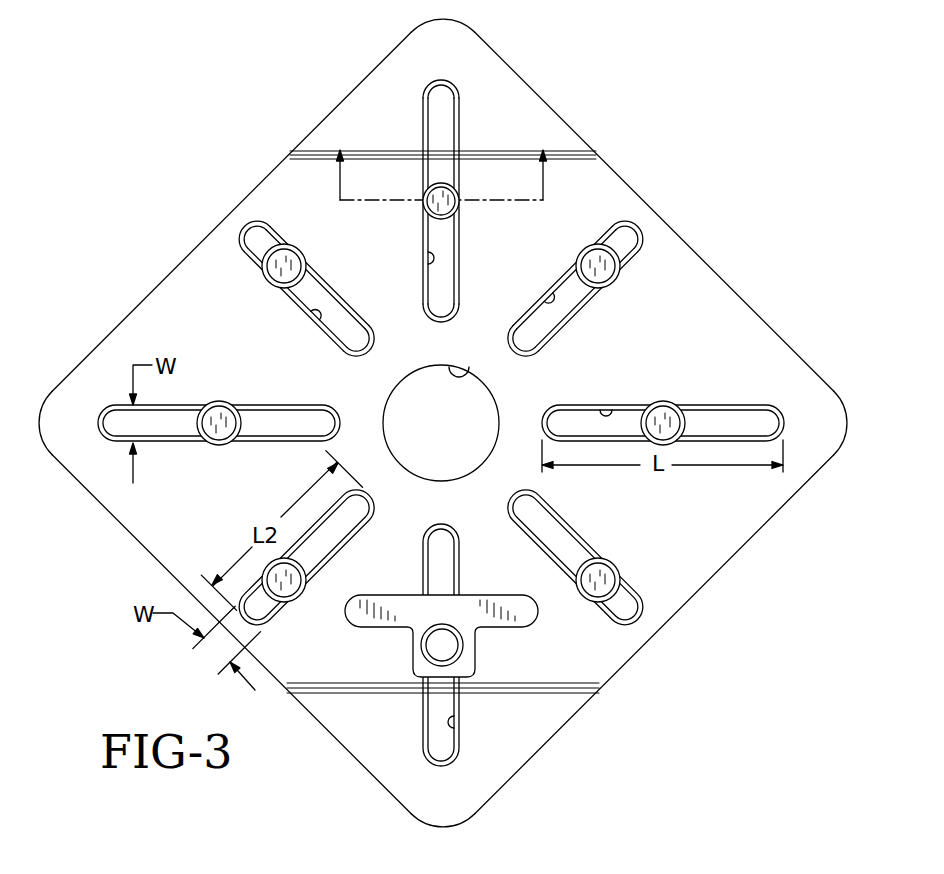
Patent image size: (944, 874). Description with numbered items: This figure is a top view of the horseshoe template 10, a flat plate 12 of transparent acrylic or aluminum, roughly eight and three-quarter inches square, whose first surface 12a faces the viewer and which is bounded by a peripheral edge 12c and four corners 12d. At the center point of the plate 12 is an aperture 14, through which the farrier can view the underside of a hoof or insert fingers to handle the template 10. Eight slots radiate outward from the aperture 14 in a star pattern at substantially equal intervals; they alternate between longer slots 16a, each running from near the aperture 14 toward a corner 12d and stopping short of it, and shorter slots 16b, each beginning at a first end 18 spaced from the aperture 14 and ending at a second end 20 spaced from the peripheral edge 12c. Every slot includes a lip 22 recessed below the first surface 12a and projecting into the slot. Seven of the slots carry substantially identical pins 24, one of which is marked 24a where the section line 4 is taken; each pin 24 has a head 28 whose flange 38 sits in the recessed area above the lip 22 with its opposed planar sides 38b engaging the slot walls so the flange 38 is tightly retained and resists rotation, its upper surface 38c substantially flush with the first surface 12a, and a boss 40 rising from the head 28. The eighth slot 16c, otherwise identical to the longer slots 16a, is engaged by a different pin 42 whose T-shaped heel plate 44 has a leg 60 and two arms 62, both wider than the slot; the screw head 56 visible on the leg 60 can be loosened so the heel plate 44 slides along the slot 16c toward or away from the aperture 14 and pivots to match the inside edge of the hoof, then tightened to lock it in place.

The horseshoe template 10 is at (672, 130).
The flat plate 12 is at (443, 431).
The first surface 12a is at (712, 325).
The peripheral edge 12c is at (697, 254).
The corners 12d is at (432, 30).
The aperture 14 is at (470, 378).
The slots 16a is at (460, 240).
The slots 16b is at (328, 285).
The eighth slot 16c is at (462, 558).
The first end 18 is at (447, 78).
The second end 20 is at (438, 325).
The lip 22 is at (555, 297).
The pins 24 is at (275, 286).
The boss 24a is at (426, 214).
The head 28 is at (423, 186).
The flange 38 is at (622, 240).
The opposed planar sides 38b is at (457, 196).
The upper surface 38c is at (240, 428).
The boss 40 is at (208, 412).
The pin 42 is at (429, 631).
The heel plate 44 is at (415, 637).
The head 56 is at (430, 652).
The leg 60 is at (478, 657).
The arms 62 is at (352, 618).
The section line 4 is at (441, 163).